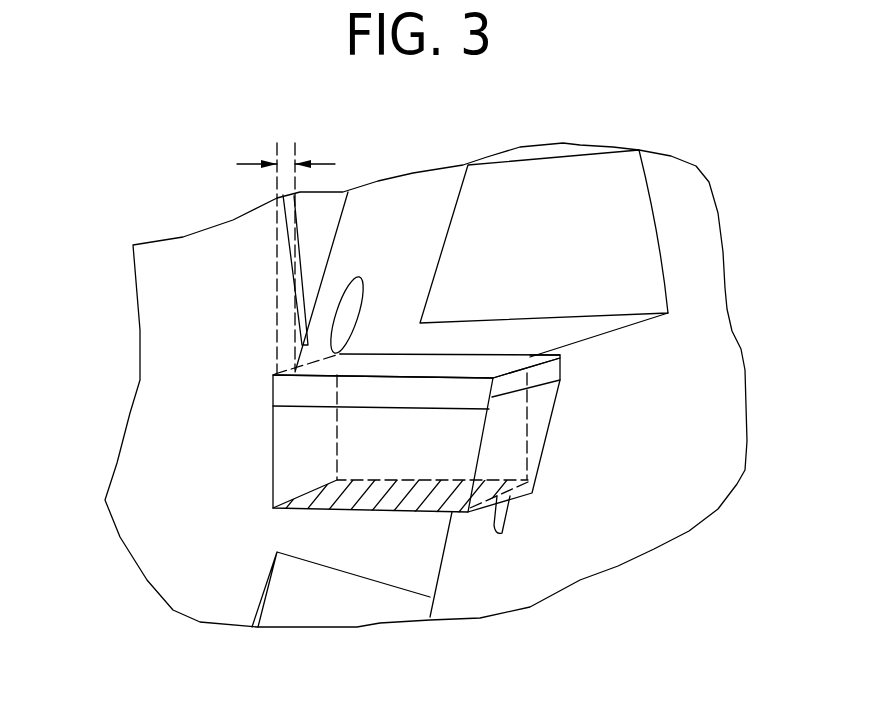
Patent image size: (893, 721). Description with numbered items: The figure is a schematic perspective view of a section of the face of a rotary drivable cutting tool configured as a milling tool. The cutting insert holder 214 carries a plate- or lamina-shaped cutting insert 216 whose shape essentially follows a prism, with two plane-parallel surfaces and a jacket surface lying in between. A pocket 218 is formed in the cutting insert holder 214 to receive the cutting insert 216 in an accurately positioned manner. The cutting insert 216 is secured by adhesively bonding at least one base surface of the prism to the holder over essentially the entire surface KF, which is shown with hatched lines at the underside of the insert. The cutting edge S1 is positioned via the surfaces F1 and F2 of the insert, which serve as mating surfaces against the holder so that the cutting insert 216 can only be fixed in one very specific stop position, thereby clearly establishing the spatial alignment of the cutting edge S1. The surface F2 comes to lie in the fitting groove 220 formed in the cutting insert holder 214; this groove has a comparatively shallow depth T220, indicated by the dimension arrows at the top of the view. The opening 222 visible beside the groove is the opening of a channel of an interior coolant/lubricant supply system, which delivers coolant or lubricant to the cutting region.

The cutting insert holder 214 is at (172, 303).
The cutting insert 216 is at (475, 526).
The pocket 218 is at (535, 221).
The fitting groove 220 is at (284, 378).
The opening of a coolant/lubricant channel 222 is at (349, 303).
The depth of the fitting groove T220 is at (292, 143).
The cutting edge S1 is at (513, 373).
The surface F1 is at (433, 451).
The surface F2 is at (322, 466).
The bonding surface KF is at (402, 502).